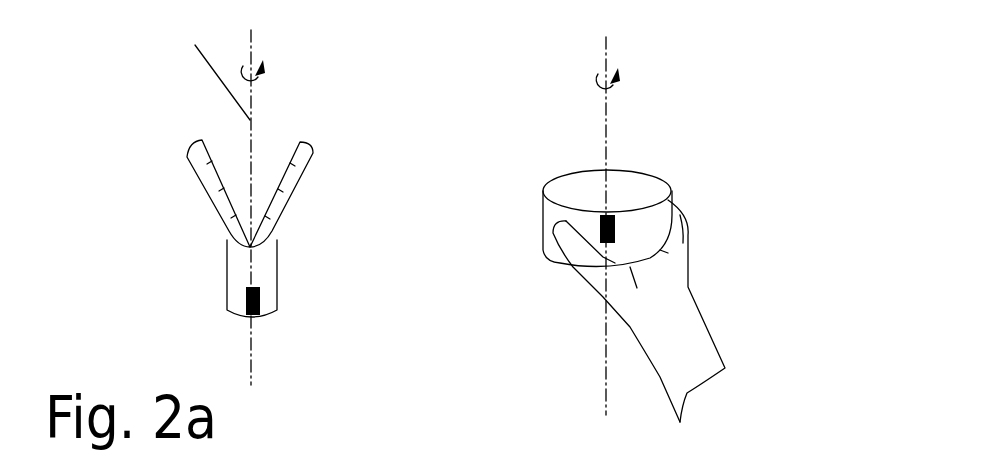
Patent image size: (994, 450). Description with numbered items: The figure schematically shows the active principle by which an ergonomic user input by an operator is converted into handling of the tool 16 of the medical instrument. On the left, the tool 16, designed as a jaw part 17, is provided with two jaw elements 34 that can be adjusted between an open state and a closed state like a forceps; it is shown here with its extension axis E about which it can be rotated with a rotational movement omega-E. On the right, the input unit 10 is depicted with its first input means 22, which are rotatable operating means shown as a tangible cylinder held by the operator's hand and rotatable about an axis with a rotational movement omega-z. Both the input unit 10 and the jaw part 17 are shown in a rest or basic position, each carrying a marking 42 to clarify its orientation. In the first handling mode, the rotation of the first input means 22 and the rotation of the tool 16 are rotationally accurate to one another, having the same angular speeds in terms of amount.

The input unit 10 is at (684, 214).
The tool 16 is at (237, 197).
The jaw part 17 is at (237, 197).
The first input means 22 is at (632, 192).
The jaw elements 34 is at (203, 172).
The markings 42 is at (247, 310).